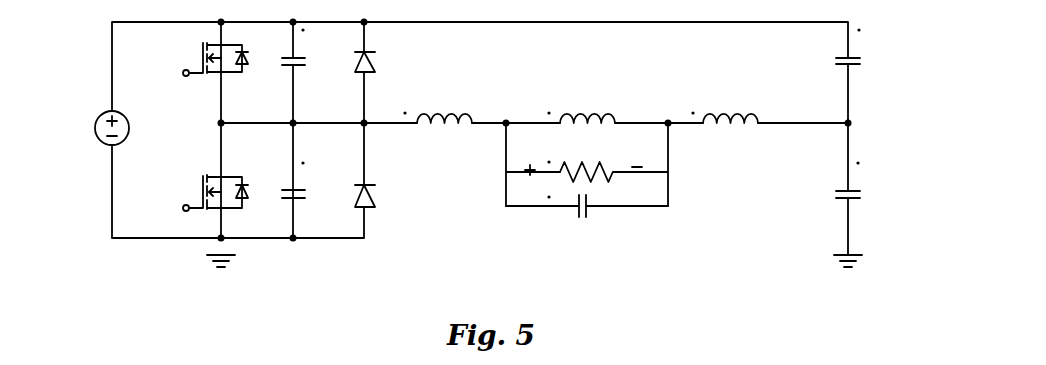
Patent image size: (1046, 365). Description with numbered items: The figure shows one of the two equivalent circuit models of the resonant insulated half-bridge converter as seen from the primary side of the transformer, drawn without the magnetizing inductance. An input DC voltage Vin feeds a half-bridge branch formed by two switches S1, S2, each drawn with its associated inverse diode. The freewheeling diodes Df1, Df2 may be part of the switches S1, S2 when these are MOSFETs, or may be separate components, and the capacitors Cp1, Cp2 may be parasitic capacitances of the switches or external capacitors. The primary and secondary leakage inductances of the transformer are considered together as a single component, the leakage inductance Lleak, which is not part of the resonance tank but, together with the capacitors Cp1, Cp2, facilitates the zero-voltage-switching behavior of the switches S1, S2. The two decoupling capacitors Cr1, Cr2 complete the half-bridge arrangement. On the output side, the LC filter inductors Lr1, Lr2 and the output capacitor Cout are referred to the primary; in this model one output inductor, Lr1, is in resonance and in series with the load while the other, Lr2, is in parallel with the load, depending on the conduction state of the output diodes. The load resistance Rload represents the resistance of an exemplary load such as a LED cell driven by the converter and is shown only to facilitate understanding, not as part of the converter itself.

The input DC voltage Vin is at (93, 118).
The switch S1 is at (208, 59).
The switch S2 is at (208, 177).
The capacitor Cp1 is at (317, 68).
The capacitor Cp2 is at (317, 202).
The freewheeling diode Df1 is at (389, 65).
The freewheeling diode Df2 is at (389, 199).
The leakage inductance Lleak is at (436, 130).
The inductor Lr1 is at (587, 107).
The inductor Lr2 is at (734, 107).
The load resistance Rload is at (587, 164).
The output capacitor Cout is at (587, 220).
The decoupling capacitor Cr1 is at (872, 69).
The decoupling capacitor Cr2 is at (872, 201).